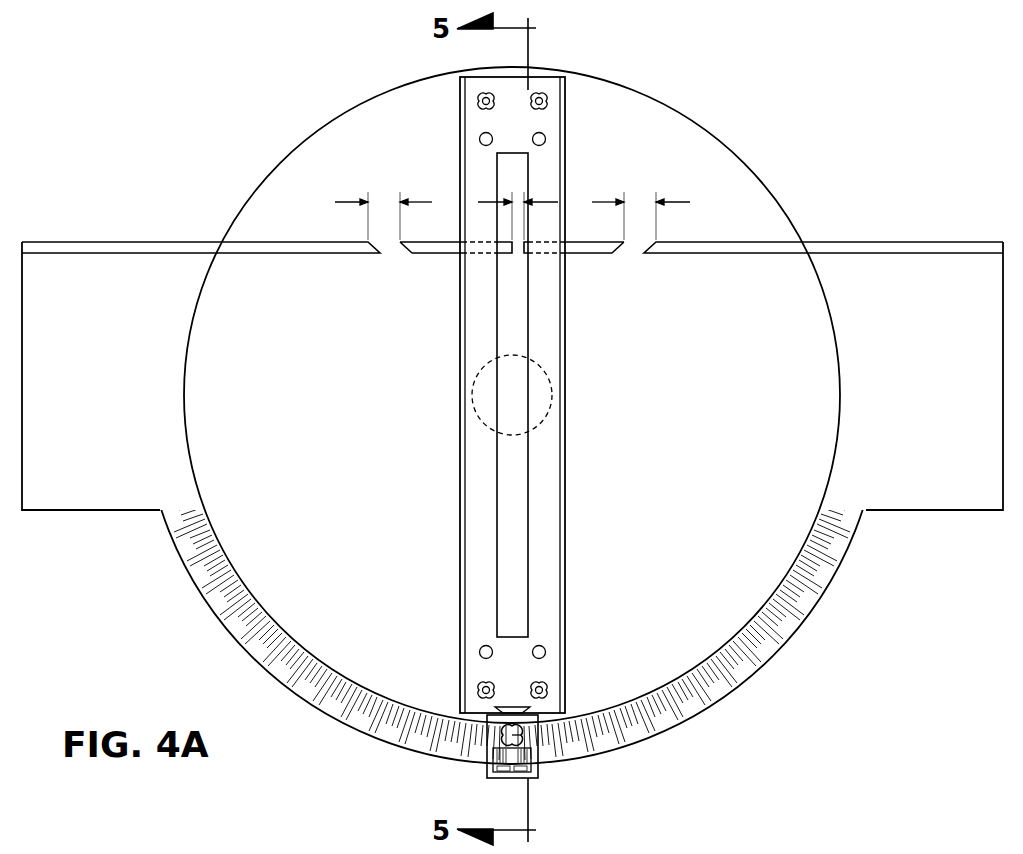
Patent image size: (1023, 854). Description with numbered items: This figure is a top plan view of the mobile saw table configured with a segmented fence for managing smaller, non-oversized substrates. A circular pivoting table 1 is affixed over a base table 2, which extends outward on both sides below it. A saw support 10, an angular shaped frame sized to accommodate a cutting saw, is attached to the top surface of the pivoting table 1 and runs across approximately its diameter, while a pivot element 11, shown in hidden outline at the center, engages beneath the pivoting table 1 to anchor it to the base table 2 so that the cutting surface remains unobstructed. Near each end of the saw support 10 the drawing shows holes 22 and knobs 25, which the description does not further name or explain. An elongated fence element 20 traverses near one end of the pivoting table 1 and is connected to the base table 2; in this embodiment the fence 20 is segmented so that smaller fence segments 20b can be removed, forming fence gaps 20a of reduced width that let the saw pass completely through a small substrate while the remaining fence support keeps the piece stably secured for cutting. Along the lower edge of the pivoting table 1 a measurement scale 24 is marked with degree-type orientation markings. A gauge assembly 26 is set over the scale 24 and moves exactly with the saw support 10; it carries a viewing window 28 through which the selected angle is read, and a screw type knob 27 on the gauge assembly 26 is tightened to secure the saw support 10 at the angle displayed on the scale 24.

The pivoting table 1 is at (311, 402).
The base table 2 is at (102, 402).
The saw support 10 is at (461, 357).
The pivot element 11 is at (487, 428).
The fence element 20 is at (153, 245).
The fence gap 20a is at (512, 207).
The fence segments 20b is at (448, 253).
The hole 22 is at (480, 141).
The measurement scale 24 is at (342, 725).
The knob 25 is at (480, 92).
The gauge assembly 26 is at (510, 776).
The screw type knob 27 is at (522, 737).
The viewing window 28 is at (530, 764).